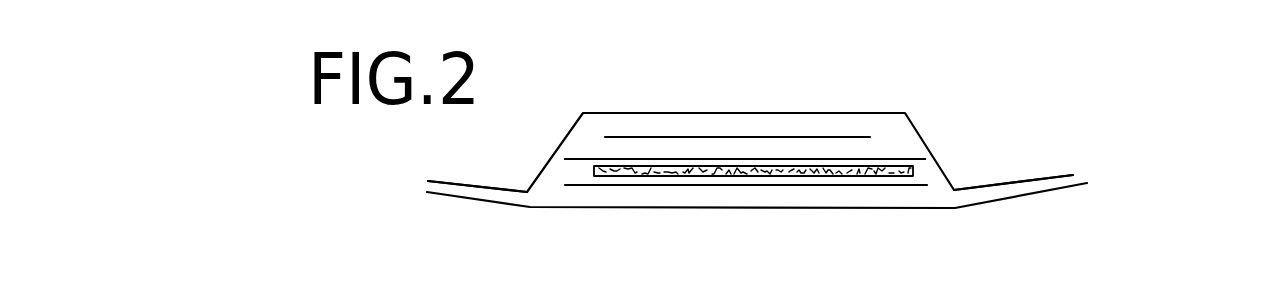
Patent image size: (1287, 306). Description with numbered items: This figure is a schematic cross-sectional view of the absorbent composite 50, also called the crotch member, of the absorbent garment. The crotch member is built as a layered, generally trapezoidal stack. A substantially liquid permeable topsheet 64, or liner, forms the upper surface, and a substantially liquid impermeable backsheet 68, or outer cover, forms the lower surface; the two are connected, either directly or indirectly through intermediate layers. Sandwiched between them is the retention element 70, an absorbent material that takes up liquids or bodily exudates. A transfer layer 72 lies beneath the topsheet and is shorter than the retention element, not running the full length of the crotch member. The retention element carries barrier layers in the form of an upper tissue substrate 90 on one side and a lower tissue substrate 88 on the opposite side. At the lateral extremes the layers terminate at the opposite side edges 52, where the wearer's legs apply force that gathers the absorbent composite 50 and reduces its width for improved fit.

The absorbent composite 50 is at (928, 123).
The opposite side edges 52 is at (422, 186).
The topsheet 64 is at (850, 112).
The backsheet 68 is at (883, 208).
The retention element 70 is at (643, 168).
The transfer layer 72 is at (716, 137).
The lower tissue substrate 88 is at (699, 178).
The upper tissue substrate 90 is at (783, 160).